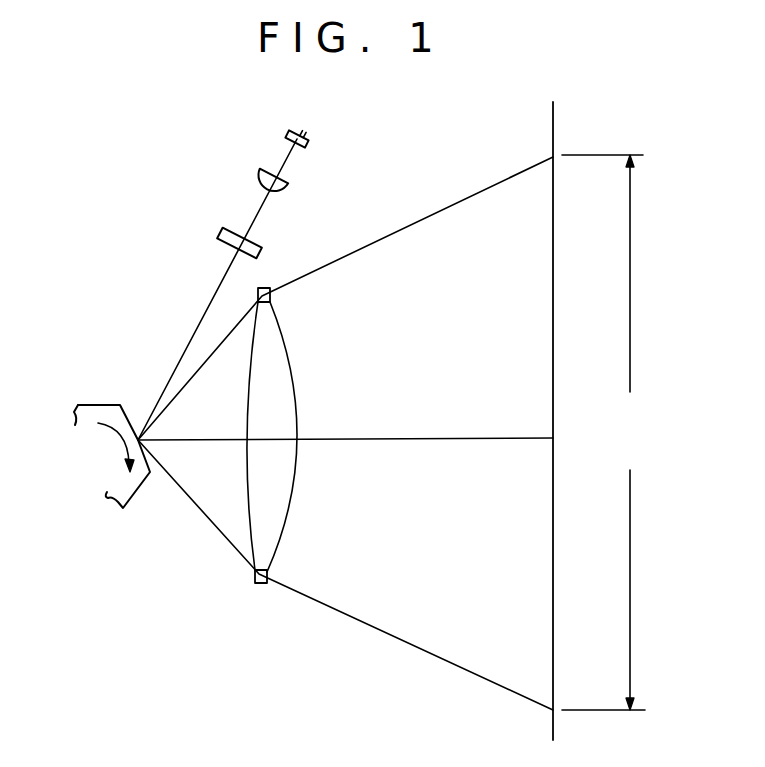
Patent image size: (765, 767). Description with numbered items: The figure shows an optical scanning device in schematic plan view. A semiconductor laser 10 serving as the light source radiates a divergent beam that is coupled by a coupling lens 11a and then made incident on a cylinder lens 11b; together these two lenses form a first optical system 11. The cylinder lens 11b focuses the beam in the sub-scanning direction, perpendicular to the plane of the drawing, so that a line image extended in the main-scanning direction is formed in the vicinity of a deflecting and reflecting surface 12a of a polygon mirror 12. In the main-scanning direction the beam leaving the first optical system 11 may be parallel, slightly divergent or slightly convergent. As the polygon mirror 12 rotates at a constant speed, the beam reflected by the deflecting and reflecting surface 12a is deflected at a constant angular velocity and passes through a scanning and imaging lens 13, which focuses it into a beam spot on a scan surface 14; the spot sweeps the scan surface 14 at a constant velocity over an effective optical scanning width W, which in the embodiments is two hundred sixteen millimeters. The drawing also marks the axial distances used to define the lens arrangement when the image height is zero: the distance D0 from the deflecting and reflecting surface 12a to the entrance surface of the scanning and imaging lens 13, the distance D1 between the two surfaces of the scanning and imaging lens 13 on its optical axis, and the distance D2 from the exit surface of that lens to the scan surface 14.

The semiconductor laser 10 is at (287, 133).
The first optical system 11 is at (257, 143).
The coupling lens 11a is at (292, 182).
The cylinder lens 11b is at (267, 254).
The polygon mirror 12 is at (93, 405).
The deflecting and reflecting surface 12a is at (128, 410).
The scanning and imaging lens 13 is at (255, 573).
The scan surface 14 is at (553, 285).
The effective optical scanning width W is at (603, 432).
The distance between deflecting and reflecting surface and entrance surface of scann D0 is at (207, 439).
The distance between surfaces of scanning and imaging lens D1 is at (267, 439).
The distance between exit surface of scanning and imaging lens and scan surface D2 is at (389, 439).